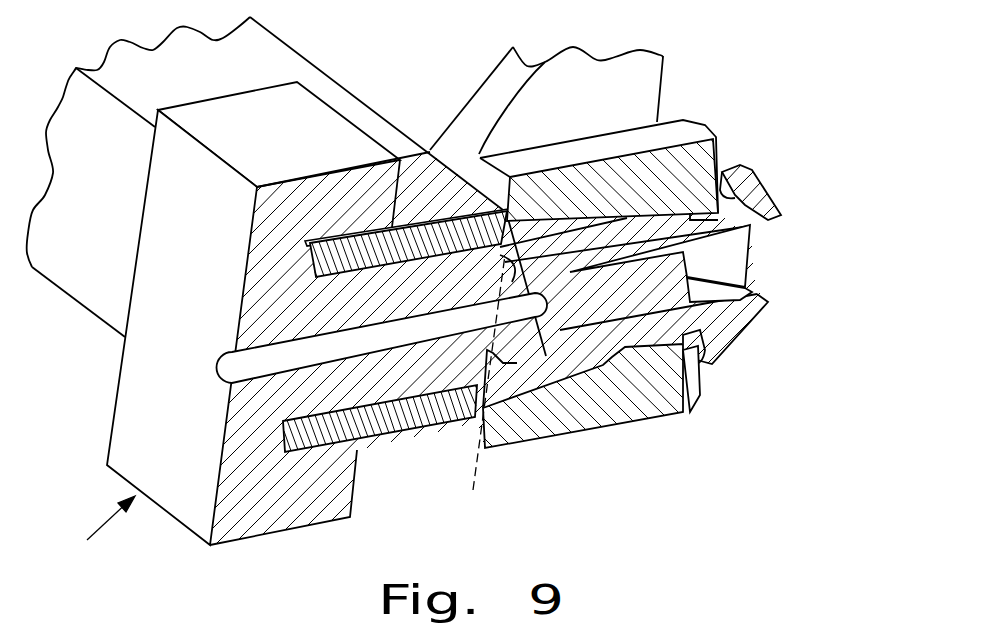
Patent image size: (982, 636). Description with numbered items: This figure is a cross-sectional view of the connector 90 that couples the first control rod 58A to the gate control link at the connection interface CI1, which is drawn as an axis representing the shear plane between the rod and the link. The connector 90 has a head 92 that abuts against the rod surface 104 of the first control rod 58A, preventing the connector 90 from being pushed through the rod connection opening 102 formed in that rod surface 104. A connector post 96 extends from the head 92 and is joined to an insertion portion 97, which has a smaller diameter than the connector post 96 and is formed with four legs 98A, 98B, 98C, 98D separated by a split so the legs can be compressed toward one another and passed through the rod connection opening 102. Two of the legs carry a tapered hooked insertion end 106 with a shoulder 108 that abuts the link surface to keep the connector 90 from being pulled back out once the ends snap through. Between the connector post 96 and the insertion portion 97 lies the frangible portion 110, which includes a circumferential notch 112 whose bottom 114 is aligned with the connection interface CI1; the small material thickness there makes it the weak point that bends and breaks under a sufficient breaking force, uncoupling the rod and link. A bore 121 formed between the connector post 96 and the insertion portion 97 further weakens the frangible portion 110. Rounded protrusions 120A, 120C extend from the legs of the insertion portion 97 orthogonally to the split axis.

The connector 90 is at (97, 534).
The head 92 is at (145, 367).
The first control rod 58A is at (285, 65).
The connector post 96 is at (447, 262).
The insertion portion 97 is at (561, 255).
The leg 98A is at (617, 236).
The leg 98B is at (757, 238).
The leg 98C is at (645, 413).
The leg 98D is at (740, 280).
The rod connection opening 102 is at (474, 200).
The rod surface 104 is at (303, 270).
The hooked insertion end 106 is at (767, 210).
The shoulder 108 is at (720, 180).
The frangible portion 110 is at (498, 380).
The notch 112 is at (462, 390).
The bottom 114 is at (563, 407).
The protrusion 120A is at (675, 215).
The protrusion 120C is at (693, 397).
The bore 121 is at (373, 447).
The connection interface CI1 is at (473, 470).